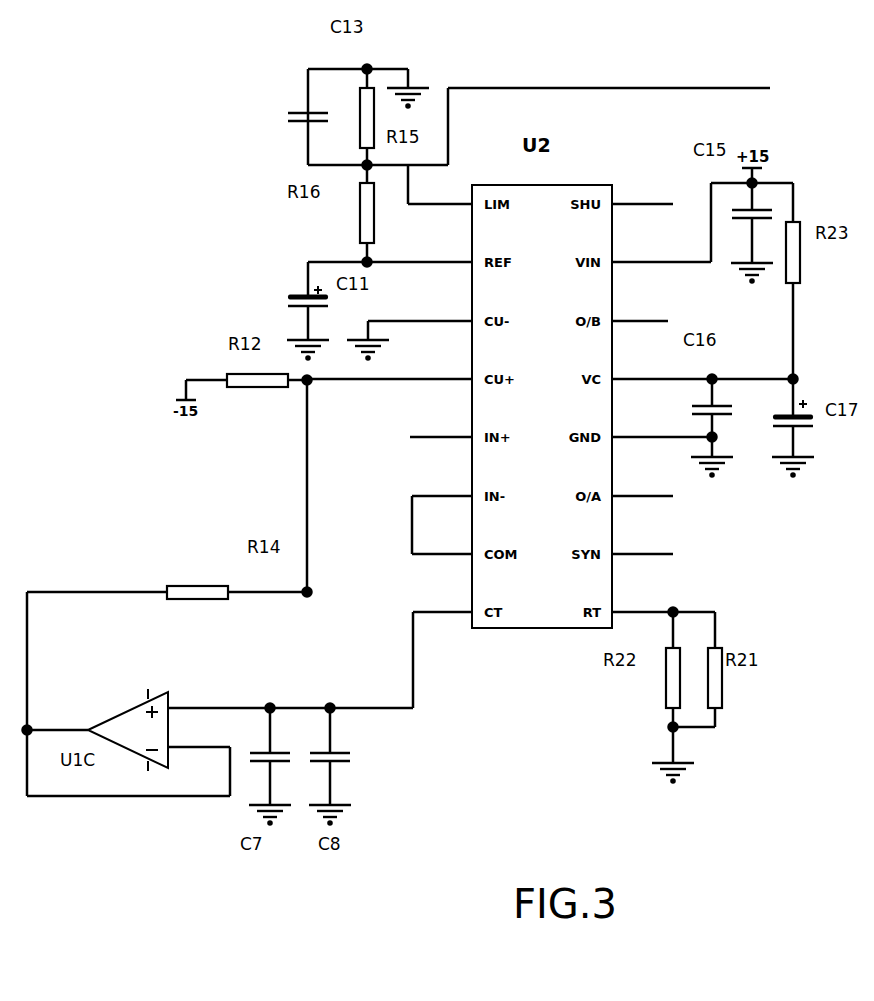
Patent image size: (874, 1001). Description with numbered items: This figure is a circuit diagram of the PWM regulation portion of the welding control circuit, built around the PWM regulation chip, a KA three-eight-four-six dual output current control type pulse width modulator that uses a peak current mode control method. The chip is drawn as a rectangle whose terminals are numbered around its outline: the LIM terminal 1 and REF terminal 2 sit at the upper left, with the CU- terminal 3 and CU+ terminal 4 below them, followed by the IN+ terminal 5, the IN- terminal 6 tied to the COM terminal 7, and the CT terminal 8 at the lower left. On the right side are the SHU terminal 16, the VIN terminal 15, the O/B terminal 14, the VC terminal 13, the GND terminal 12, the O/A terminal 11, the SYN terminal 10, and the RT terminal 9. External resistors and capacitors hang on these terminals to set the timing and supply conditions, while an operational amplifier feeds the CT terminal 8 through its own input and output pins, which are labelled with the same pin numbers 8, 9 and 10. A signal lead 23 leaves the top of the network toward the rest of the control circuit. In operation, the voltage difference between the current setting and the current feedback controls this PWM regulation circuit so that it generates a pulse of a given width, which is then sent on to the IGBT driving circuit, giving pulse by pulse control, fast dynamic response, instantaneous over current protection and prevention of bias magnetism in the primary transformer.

The U2 pin 1 LIM 1 is at (440, 184).
The U2 pin 2 REF 2 is at (419, 253).
The U2 pin 3 CU- 3 is at (409, 331).
The U2 pin 4 CU+ 4 is at (389, 370).
The U2 pin 5 IN+ 5 is at (441, 428).
The U2 pin 6 IN- 6 is at (442, 487).
The U2 pin 7 COM 7 is at (442, 525).
The U2 pin 8 CT / U1C output pin 8 is at (249, 662).
The U2 pin 9 RT / U1C inverting input pin 9 is at (371, 695).
The U2 pin 10 SYN / U1C non-inverting input pin 10 is at (420, 622).
The U2 pin 11 O/A 11 is at (642, 487).
The U2 pin 12 GND 12 is at (662, 428).
The U2 pin 13 VC 13 is at (702, 370).
The U2 pin 14 O/B 14 is at (640, 312).
The U2 pin 15 VIN 15 is at (661, 253).
The U2 pin 16 SHU 16 is at (642, 195).
The signal net 23 connection 23 is at (637, 121).